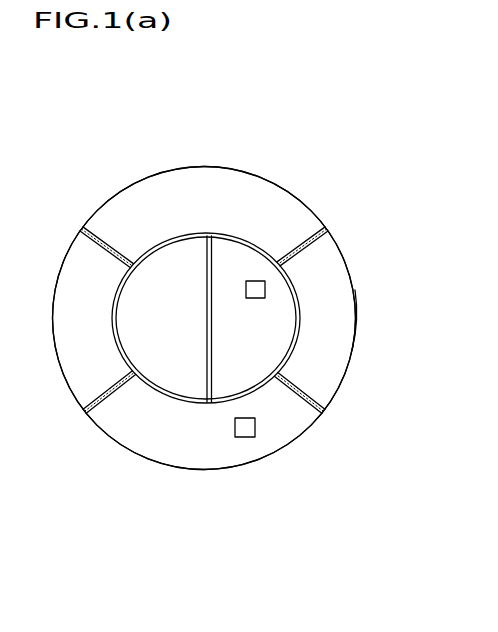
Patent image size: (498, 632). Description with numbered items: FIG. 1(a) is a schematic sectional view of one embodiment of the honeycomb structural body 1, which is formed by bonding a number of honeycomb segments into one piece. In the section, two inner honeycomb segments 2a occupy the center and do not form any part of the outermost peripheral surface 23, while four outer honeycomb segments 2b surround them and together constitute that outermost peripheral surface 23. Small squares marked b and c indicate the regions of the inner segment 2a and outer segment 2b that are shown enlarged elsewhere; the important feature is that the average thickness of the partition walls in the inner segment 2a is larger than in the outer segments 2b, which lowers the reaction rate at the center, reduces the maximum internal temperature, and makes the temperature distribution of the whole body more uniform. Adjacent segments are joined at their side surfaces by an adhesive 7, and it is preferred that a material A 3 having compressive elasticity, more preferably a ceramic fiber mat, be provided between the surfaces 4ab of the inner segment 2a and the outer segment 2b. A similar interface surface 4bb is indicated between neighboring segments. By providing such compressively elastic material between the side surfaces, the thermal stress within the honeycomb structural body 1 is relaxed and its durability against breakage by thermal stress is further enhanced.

The honeycomb structural body 1 is at (248, 149).
The inner honeycomb segment 2a is at (270, 330).
The outer honeycomb segment 2b is at (287, 212).
The outermost peripheral surface 23 is at (357, 352).
The material A having compressive elasticity 3 is at (205, 403).
The adhesive 7 is at (305, 400).
The surfaces between inner segment and outer segment 4ab is at (187, 401).
The rib wall surface 4bb is at (115, 395).
The enlarged view region of inner segment b is at (268, 285).
The enlarged view region of outer segment c is at (258, 428).